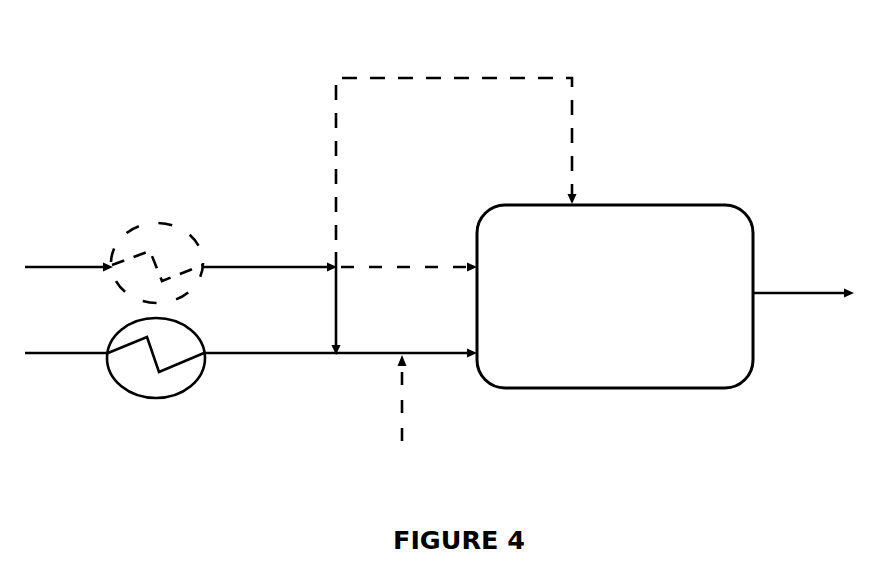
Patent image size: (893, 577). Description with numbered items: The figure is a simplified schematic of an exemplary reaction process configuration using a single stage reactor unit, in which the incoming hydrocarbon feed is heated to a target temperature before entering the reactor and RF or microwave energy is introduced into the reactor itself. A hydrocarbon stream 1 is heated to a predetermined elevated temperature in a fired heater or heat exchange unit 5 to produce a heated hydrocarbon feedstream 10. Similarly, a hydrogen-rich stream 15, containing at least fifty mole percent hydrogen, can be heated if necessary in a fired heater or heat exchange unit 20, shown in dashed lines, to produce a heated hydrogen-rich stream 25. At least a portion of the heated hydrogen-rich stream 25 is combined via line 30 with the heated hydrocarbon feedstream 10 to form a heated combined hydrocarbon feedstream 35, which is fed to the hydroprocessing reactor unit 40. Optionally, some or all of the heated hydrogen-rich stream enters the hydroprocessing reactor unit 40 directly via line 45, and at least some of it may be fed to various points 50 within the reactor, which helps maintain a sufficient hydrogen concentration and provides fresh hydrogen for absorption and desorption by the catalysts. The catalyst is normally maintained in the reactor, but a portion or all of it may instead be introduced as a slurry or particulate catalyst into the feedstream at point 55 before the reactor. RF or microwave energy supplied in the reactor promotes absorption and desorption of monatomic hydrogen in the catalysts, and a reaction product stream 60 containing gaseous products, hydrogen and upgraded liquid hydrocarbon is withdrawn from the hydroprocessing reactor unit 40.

The hydrocarbon stream 1 is at (66, 370).
The fired heater or heat exchange unit 5 is at (156, 379).
The heated hydrocarbon feedstream 10 is at (270, 371).
The hydrogen-rich stream 15 is at (69, 248).
The fired heater or heat exchange unit 20 is at (157, 242).
The heated hydrogen-rich stream 25 is at (270, 248).
The combining line 30 is at (350, 303).
The heated combined hydrocarbon feedstream 35 is at (406, 343).
The hydroprocessing reactor unit 40 is at (615, 296).
The line 45 is at (409, 253).
The various points within the hydroprocessing reactor unit 50 is at (456, 132).
The catalyst entry point 55 is at (417, 398).
The reaction product stream 60 is at (803, 278).